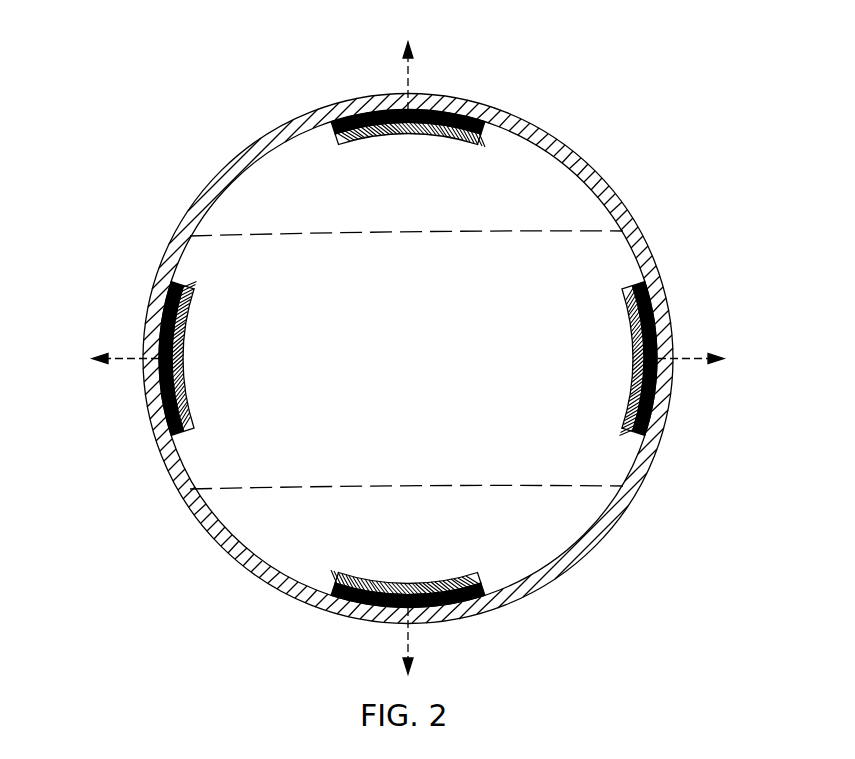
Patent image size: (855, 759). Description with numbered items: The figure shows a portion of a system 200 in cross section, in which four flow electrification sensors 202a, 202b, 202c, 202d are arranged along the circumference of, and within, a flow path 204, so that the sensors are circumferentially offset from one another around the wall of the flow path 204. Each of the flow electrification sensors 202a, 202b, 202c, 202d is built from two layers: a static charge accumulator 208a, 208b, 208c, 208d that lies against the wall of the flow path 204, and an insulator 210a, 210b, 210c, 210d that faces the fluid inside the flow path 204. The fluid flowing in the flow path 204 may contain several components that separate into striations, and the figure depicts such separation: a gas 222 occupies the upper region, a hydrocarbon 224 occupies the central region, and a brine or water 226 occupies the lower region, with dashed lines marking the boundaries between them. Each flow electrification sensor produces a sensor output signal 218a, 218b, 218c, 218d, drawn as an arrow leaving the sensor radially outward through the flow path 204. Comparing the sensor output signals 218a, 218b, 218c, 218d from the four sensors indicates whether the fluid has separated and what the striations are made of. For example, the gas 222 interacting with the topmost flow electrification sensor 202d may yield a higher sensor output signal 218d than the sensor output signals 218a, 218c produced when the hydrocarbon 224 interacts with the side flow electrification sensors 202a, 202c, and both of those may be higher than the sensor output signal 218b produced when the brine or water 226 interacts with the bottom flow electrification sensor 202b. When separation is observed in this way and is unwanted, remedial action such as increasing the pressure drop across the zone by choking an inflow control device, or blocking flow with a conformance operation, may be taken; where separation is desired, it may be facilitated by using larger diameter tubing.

The system 200 is at (130, 114).
The flow path 204 is at (628, 216).
The flow electrification sensor 202a is at (226, 365).
The flow electrification sensor 202b is at (416, 557).
The flow electrification sensor 202c is at (601, 370).
The flow electrification sensor 202d is at (433, 158).
The static charge accumulator 208a is at (181, 333).
The static charge accumulator 208b is at (362, 586).
The static charge accumulator 208c is at (640, 308).
The static charge accumulator 208d is at (464, 132).
The insulator 210a is at (172, 284).
The insulator 210b is at (334, 588).
The insulator 210c is at (637, 290).
The insulator 210d is at (478, 131).
The sensor output signal 218a is at (126, 360).
The sensor output signal 218b is at (409, 644).
The sensor output signal 218c is at (691, 360).
The sensor output signal 218d is at (409, 78).
The gas 222 is at (412, 212).
The hydrocarbon 224 is at (425, 369).
The brine or water 226 is at (442, 523).